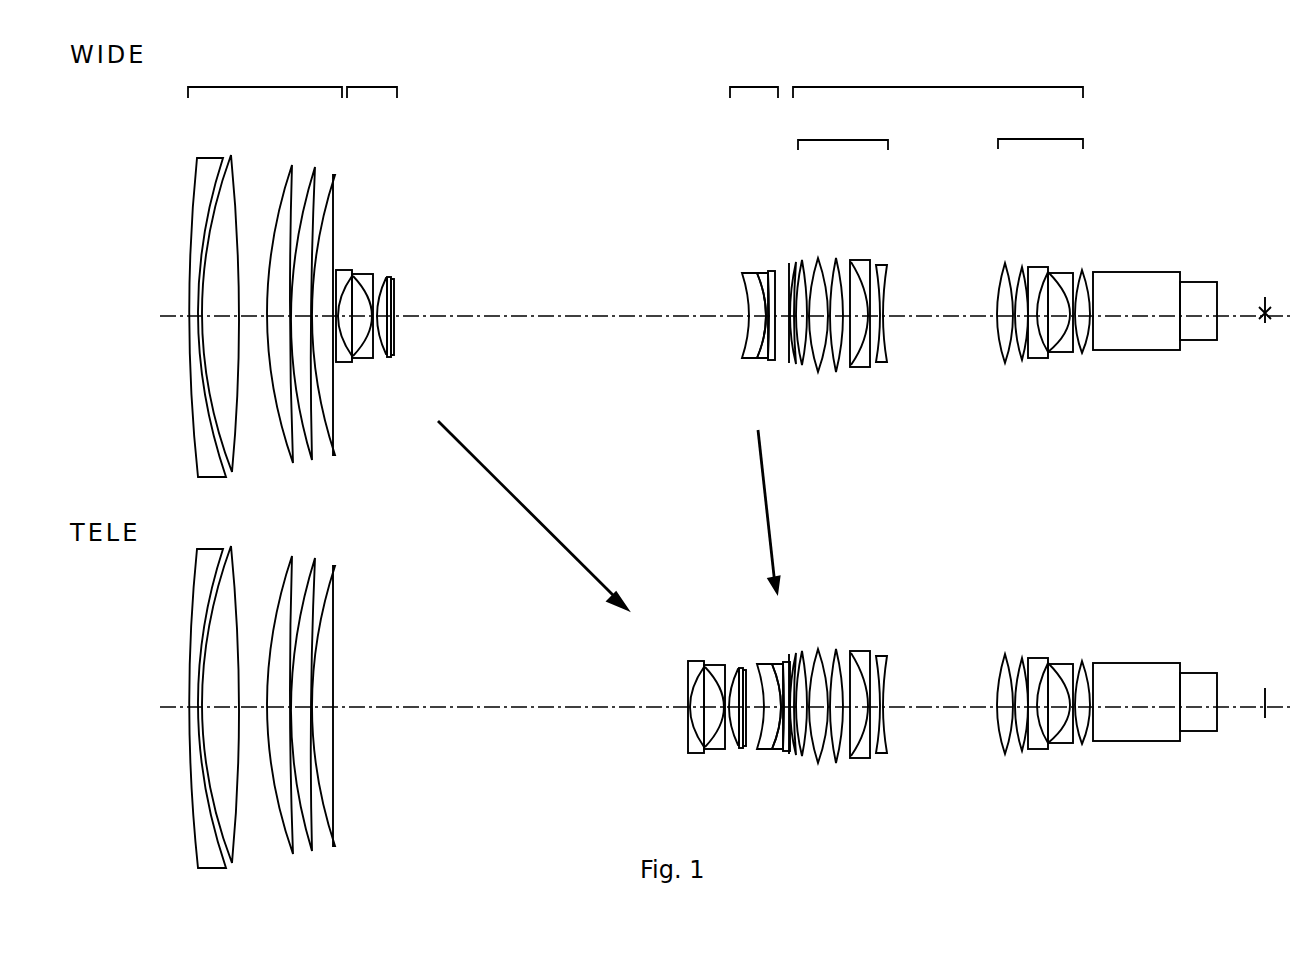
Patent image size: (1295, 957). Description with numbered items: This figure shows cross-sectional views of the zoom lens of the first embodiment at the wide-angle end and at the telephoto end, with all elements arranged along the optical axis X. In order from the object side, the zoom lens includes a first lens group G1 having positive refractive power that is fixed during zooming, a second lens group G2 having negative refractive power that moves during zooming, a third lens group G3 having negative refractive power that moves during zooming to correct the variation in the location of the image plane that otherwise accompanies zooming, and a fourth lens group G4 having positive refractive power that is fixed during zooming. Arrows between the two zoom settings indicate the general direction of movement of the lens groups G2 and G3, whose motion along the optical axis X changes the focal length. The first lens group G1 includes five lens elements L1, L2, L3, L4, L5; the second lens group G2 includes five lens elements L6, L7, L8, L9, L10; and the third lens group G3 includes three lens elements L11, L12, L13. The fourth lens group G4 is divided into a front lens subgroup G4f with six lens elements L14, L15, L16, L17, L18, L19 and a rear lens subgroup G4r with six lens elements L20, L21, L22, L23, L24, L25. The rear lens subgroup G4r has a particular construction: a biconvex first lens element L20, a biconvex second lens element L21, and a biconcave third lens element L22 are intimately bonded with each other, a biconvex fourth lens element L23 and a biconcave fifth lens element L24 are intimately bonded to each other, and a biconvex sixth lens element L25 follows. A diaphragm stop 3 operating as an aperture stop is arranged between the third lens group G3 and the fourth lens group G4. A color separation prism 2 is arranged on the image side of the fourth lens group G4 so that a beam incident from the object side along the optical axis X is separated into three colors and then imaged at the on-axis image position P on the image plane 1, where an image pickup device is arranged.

The first lens element L1 is at (210, 158).
The second lens element L2 is at (233, 160).
The third lens element L3 is at (292, 165).
The fourth lens element L4 is at (315, 167).
The fifth lens element L5 is at (335, 175).
The sixth lens element L6 is at (340, 270).
The seventh lens element L7 is at (349, 272).
The eighth lens element L8 is at (376, 276).
The ninth lens element L9 is at (389, 277).
The tenth lens element L10 is at (393, 277).
The eleventh lens element L11 is at (745, 273).
The twelfth lens element L12 is at (760, 272).
The thirteenth lens element L13 is at (769, 270).
The fourteenth lens element L14 is at (796, 262).
The fifteenth lens element L15 is at (803, 260).
The sixteenth lens element L16 is at (820, 258).
The seventeenth lens element L17 is at (838, 258).
The eighteenth lens element L18 is at (858, 260).
The nineteenth lens element L19 is at (882, 265).
The biconvex first lens element of rear lens subgroup L20 is at (1003, 262).
The biconvex second lens element of rear lens subgroup L21 is at (1022, 267).
The biconcave third lens element of rear lens subgroup L22 is at (1036, 267).
The biconvex fourth lens element of rear lens subgroup L23 is at (1052, 272).
The biconcave fifth lens element of rear lens subgroup L24 is at (1063, 273).
The biconvex sixth lens element of rear lens subgroup L25 is at (1081, 270).
The first lens group G1 is at (265, 73).
The second lens group G2 is at (372, 74).
The third lens group G3 is at (754, 72).
The fourth lens group G4 is at (938, 72).
The front lens subgroup G4f is at (843, 128).
The rear lens subgroup G4r is at (1040, 126).
The image plane 1 is at (1265, 298).
The color separation prism 2 is at (1198, 282).
The diaphragm stop 3 is at (789, 263).
The image position P is at (1262, 322).
The optical axis X is at (185, 316).